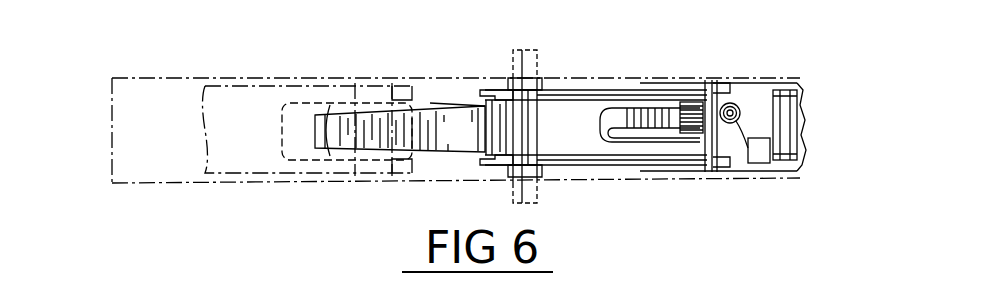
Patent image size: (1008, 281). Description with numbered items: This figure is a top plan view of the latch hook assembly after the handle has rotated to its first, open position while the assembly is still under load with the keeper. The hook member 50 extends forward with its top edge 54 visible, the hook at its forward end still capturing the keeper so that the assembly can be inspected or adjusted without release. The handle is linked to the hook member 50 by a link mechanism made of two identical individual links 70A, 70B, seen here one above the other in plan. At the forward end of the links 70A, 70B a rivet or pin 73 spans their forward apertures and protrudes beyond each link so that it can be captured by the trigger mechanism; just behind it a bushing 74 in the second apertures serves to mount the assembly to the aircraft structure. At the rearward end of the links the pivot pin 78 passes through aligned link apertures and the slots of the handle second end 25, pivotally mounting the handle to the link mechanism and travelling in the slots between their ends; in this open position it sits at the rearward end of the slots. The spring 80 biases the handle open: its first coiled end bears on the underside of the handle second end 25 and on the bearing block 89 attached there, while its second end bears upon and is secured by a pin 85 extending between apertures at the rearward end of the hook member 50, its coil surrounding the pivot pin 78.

The handle second end 25 is at (793, 75).
The hook member 50 is at (432, 95).
The top edge 54 is at (476, 145).
The link 70A is at (578, 92).
The link 70B is at (590, 162).
The pin 73 is at (470, 103).
The bushing 74 is at (510, 172).
The pivot pin 78 is at (712, 92).
The spring 80 is at (752, 90).
The pin 85 is at (618, 128).
The bearing block 89 is at (758, 153).